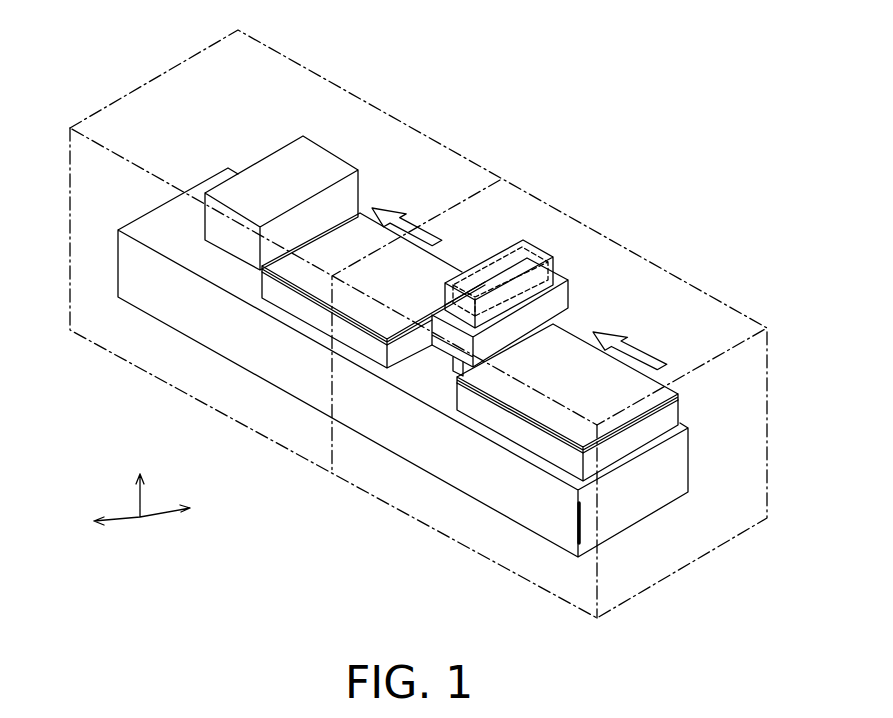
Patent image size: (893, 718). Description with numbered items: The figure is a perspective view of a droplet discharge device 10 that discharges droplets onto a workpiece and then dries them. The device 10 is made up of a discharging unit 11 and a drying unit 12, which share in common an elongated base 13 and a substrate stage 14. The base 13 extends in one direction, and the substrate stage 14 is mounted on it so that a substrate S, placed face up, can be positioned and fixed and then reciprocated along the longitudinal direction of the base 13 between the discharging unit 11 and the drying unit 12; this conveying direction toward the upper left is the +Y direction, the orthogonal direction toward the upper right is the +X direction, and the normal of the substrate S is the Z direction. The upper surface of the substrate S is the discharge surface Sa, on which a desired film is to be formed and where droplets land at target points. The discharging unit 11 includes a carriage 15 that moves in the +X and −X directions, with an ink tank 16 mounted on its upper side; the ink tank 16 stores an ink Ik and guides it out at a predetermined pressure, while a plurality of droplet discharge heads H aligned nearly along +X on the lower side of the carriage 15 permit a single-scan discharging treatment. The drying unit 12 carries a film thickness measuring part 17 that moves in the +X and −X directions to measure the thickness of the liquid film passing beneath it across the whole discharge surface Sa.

The droplet discharge device 10 is at (93, 58).
The discharging unit 11 is at (600, 231).
The drying unit 12 is at (322, 78).
The base 13 is at (518, 511).
The substrate stage 14 is at (312, 315).
The carriage 15 is at (572, 295).
The ink tank 16 is at (560, 263).
The film thickness measuring part 17 is at (333, 152).
The substrate S is at (385, 299).
The discharge surface Sa is at (320, 264).
The droplet discharge heads H is at (450, 360).
The ink Ik is at (490, 254).